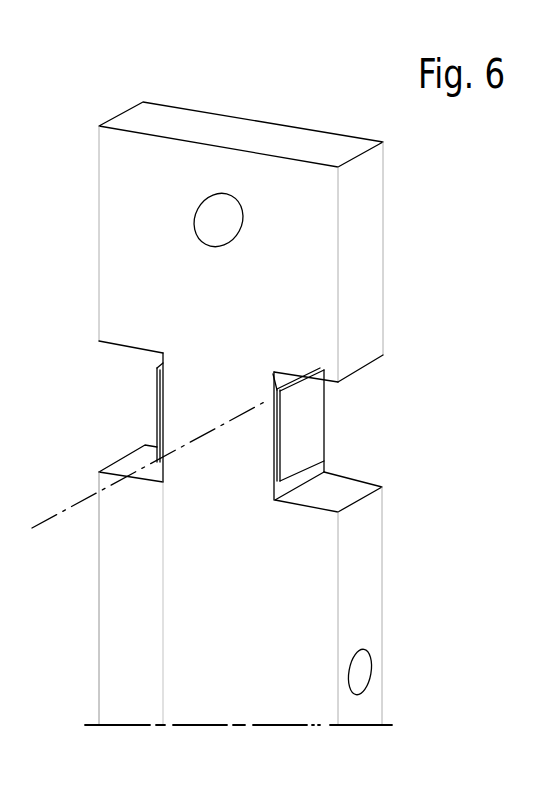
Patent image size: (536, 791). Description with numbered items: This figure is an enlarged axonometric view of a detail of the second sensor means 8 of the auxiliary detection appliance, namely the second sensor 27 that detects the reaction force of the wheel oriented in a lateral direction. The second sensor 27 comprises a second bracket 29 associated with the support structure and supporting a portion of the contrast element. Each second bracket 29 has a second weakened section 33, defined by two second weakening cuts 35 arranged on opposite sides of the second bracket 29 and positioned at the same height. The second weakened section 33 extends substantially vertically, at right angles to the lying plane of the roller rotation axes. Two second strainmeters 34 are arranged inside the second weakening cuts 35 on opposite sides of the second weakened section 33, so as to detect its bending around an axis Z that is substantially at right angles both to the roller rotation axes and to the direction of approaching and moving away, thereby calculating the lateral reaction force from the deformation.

The second sensor means 8 is at (280, 112).
The second sensor 27 is at (97, 233).
The second bracket 29 is at (290, 580).
The second weakened section 33 is at (203, 412).
The second strainmeter 34 is at (157, 400).
The second weakening cut 35 is at (124, 460).
The axis Z is at (62, 512).